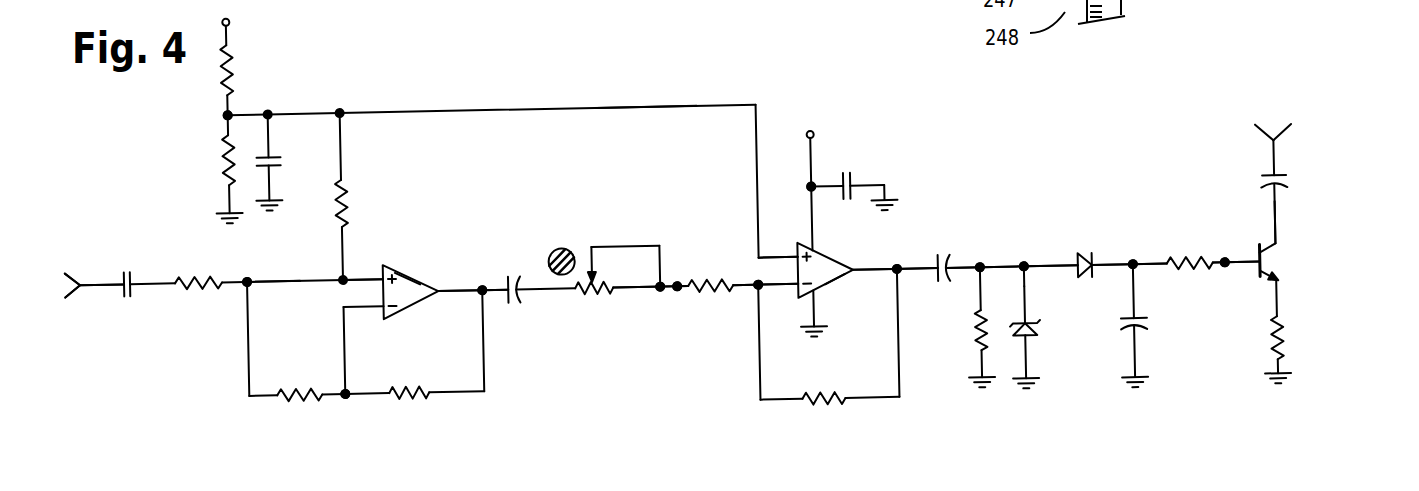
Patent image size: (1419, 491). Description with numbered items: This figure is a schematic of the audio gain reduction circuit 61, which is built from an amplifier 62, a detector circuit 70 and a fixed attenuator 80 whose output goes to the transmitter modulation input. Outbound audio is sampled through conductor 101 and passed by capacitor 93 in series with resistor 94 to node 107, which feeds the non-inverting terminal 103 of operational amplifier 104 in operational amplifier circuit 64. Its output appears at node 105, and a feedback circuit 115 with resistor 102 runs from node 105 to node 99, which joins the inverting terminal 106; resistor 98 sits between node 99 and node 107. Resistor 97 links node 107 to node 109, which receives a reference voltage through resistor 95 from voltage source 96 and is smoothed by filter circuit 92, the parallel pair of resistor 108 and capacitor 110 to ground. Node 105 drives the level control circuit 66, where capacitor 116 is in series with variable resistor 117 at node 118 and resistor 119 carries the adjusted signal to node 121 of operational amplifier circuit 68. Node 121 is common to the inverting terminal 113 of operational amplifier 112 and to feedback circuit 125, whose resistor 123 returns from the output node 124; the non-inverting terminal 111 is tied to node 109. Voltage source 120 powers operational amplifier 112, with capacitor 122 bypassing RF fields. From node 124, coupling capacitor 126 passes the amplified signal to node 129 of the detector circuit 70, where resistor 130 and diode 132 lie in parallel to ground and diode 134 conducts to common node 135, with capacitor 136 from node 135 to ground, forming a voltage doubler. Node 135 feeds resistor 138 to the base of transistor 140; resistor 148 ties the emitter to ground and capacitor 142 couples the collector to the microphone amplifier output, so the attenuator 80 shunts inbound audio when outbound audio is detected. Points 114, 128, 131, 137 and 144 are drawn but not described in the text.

The audio gain reduction circuit 61 is at (693, 52).
The amplifier 62 is at (487, 103).
The operational amplifier circuit 64 is at (412, 243).
The level control circuit 66 is at (645, 198).
The operational amplifier circuit 68 is at (908, 162).
The detector circuit 70 is at (1092, 152).
The fixed attenuator 80 is at (1322, 198).
The filter circuit 92 is at (183, 110).
The capacitor 93 is at (124, 270).
The resistor 94 is at (188, 275).
The resistor 95 is at (244, 70).
The voltage source 96 is at (234, 22).
The resistor 97 is at (343, 196).
The resistor 98 is at (273, 405).
The node 99 is at (340, 397).
The conductor 101 is at (103, 288).
The resistor 102 is at (418, 392).
The non-inverting terminal 103 is at (362, 280).
The operational amplifier 104 is at (427, 276).
The node 105 is at (486, 283).
The inverting terminal 106 is at (367, 309).
The node 107 is at (302, 281).
The resistor 108 is at (220, 157).
The node 109 is at (311, 113).
The capacitor 110 is at (284, 163).
The non-inverting terminal 111 is at (777, 257).
The operational amplifier 112 is at (835, 286).
The inverting terminal 113 is at (777, 289).
The output node 114 is at (455, 294).
The feedback circuit 115 is at (485, 369).
The capacitor 116 is at (513, 305).
The variable resistor 117 is at (599, 293).
The node 118 is at (677, 283).
The resistor 119 is at (728, 289).
The voltage source 120 is at (812, 128).
The node 121 is at (756, 287).
The capacitor 122 is at (848, 168).
The resistor 123 is at (840, 393).
The node 124 is at (903, 263).
The feedback circuit 125 is at (900, 375).
The coupling capacitor 126 is at (946, 252).
The node 128 is at (965, 261).
The node 129 is at (1027, 260).
The resistor 130 is at (978, 318).
The ground 131 is at (1040, 393).
The diode 132 is at (1037, 332).
The diode 134 is at (1085, 258).
The common input node 135 is at (1130, 261).
The capacitor 136 is at (1150, 327).
The node 137 is at (1228, 258).
The input resistor 138 is at (1190, 265).
The transistor 140 is at (1278, 257).
The capacitor 142 is at (1263, 183).
The connection to microphone amplifier 144 is at (1280, 170).
The resistor 148 is at (1268, 320).